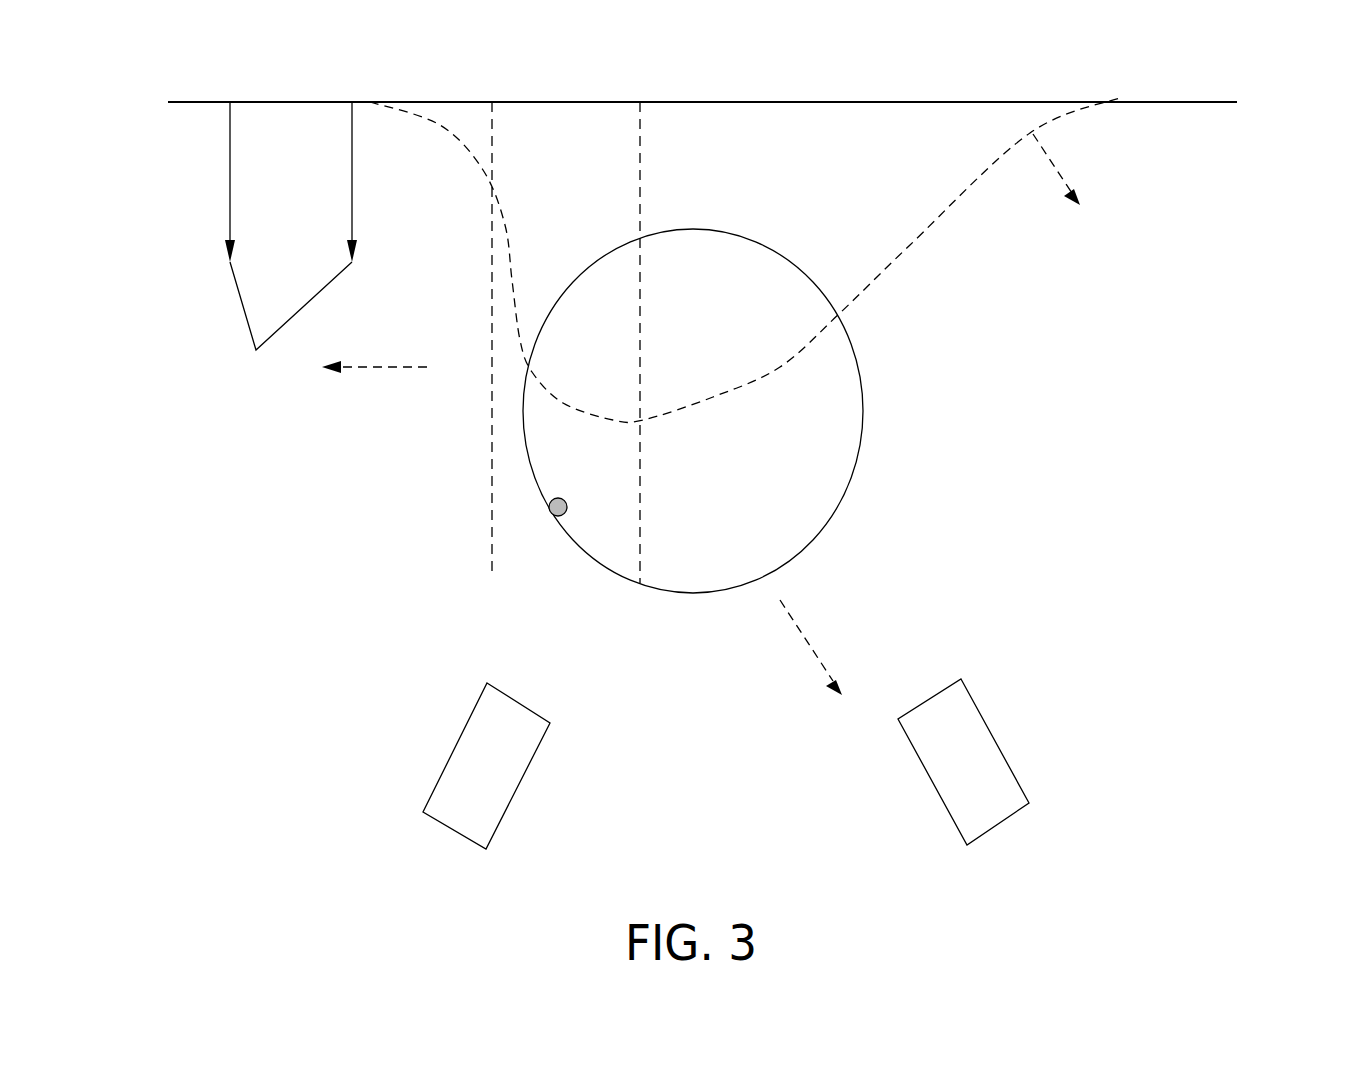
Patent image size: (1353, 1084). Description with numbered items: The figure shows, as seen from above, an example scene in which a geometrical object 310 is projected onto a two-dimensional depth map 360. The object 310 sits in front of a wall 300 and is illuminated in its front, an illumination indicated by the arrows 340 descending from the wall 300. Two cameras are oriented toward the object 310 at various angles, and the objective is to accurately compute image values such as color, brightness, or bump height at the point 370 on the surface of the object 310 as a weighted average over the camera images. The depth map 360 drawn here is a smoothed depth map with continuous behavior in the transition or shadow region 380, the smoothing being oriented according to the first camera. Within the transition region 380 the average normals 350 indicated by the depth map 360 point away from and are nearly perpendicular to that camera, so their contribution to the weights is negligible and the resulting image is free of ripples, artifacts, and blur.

The wall 300 is at (229, 88).
The object 310 is at (863, 407).
The light beam / illumination 340 is at (285, 241).
The average normals 350 is at (405, 366).
The depth map 360 is at (910, 245).
The point 370 is at (556, 516).
The transition region 380 is at (640, 152).